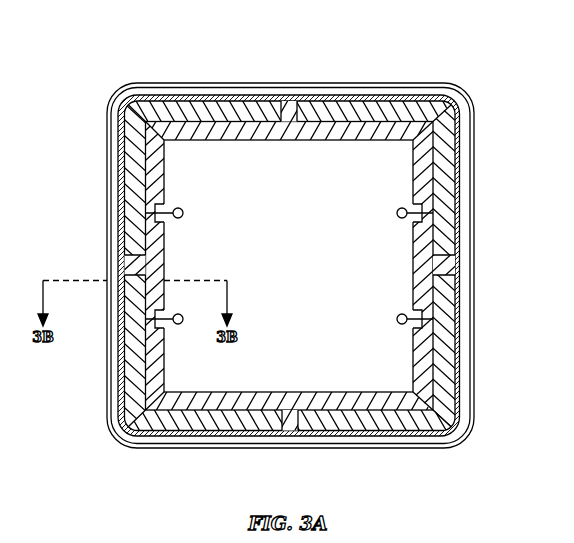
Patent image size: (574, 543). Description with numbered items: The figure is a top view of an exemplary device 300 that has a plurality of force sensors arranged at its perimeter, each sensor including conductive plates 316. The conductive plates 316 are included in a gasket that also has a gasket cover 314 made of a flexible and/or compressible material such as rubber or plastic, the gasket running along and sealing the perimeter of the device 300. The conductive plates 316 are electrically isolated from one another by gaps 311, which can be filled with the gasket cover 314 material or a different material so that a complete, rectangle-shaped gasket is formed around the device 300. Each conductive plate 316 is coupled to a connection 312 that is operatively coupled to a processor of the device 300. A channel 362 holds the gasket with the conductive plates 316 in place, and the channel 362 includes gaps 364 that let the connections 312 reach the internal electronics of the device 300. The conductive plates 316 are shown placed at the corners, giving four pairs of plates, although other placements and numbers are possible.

The device 300 is at (130, 78).
The gaps 311 is at (289, 96).
The connection 312 is at (184, 213).
The gasket cover 314 is at (476, 128).
The conductive plates 316 is at (384, 97).
The channel 362 is at (385, 141).
The gaps 364 is at (150, 209).